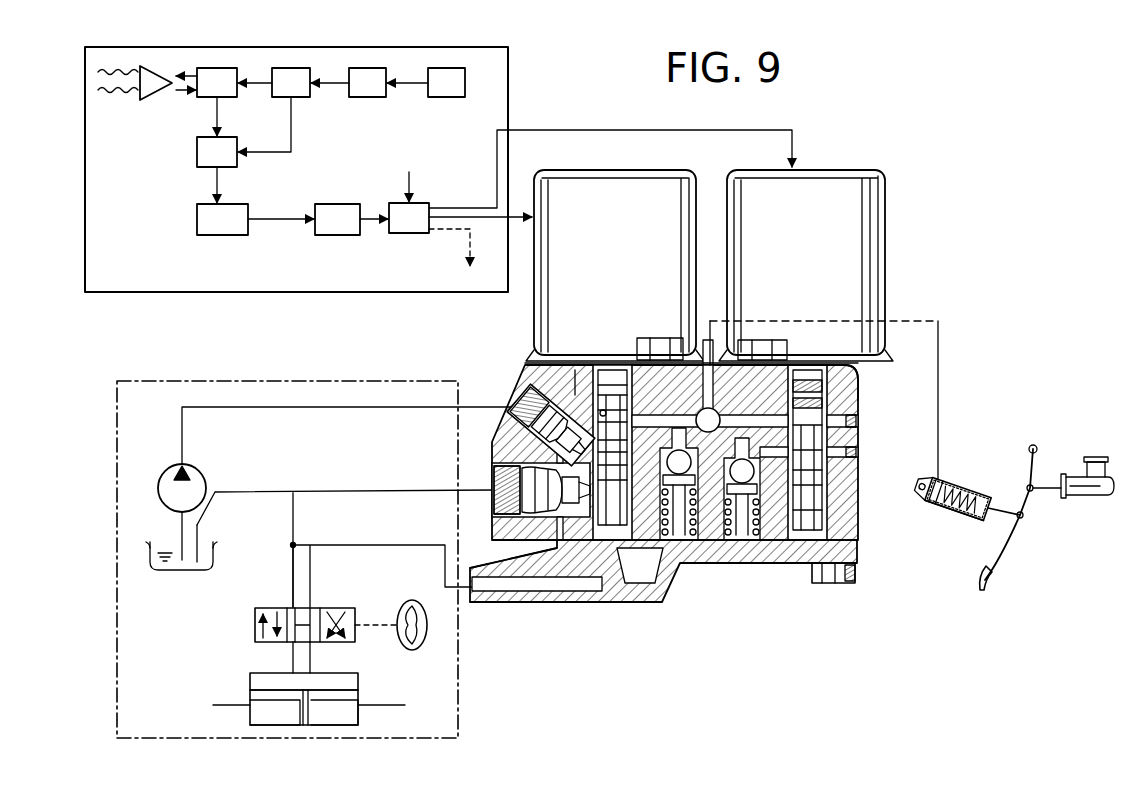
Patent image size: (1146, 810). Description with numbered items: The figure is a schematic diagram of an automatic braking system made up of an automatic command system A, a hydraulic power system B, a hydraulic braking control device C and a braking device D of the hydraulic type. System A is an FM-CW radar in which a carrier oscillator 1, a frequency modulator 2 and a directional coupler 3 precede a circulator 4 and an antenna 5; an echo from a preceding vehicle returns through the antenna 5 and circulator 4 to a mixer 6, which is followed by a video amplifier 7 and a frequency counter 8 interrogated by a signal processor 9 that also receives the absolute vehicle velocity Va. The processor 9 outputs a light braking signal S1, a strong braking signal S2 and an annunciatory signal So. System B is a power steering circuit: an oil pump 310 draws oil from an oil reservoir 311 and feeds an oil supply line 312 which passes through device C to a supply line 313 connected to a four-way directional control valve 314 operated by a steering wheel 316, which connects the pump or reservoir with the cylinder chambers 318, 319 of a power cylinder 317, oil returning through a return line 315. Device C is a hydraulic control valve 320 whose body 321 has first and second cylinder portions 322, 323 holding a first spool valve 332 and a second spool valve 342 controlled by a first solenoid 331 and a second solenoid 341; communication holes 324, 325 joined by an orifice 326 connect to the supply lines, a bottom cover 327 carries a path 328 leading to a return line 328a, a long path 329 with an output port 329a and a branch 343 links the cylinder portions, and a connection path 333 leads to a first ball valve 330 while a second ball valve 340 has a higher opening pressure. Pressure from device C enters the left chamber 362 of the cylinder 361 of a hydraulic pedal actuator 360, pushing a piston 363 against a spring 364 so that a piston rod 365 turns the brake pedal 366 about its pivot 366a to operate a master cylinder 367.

The carrier oscillator 1 is at (444, 97).
The frequency modulator 2 is at (364, 97).
The directional coupler 3 is at (300, 97).
The circulator 4 is at (205, 97).
The antenna 5 is at (142, 100).
The mixer 6 is at (196, 156).
The video amplifier 7 is at (211, 235).
The frequency counter 8 is at (327, 204).
The signal processor 9 is at (400, 233).
The automatic command system A is at (509, 78).
The hydraulic power system B is at (340, 381).
The hydraulic braking control device C is at (908, 213).
The braking device D is at (1072, 452).
The absolute velocity Va is at (410, 171).
The light braking signal S1 is at (483, 222).
The strong braking signal S2 is at (467, 204).
The annunciatory signal So is at (449, 247).
The oil pump 310 is at (198, 470).
The oil reservoir 311 is at (176, 570).
The oil supply line 312 is at (282, 407).
The supply line 313 is at (345, 492).
The directional control valve 314 is at (322, 600).
The return line 315 is at (293, 573).
The steering wheel 316 is at (403, 650).
The power cylinder 317 is at (246, 692).
The cylinder chamber 318 is at (250, 718).
The cylinder chamber 319 is at (340, 718).
The hydraulic control valve 320 is at (512, 358).
The body 321 is at (870, 386).
The first cylinder portion 322 is at (575, 378).
The second cylinder portion 323 is at (815, 465).
The communication hole 324 is at (527, 417).
The communication hole 325 is at (492, 503).
The orifice 326 is at (492, 450).
The bottom cover 327 is at (720, 565).
The path 328 is at (515, 588).
The return line 328a is at (330, 545).
The long path 329 is at (650, 415).
The output port 329a is at (716, 410).
The first ball valve 330 is at (770, 548).
The first solenoid 331 is at (632, 178).
The first spool valve 332 is at (613, 478).
The connection path 333 is at (805, 553).
The second ball valve 340 is at (705, 548).
The second solenoid 341 is at (844, 180).
The second spool valve 342 is at (810, 375).
The branch 343 is at (703, 347).
The hydraulic pedal actuator 360 is at (960, 420).
The cylinder 361 is at (964, 520).
The left chamber 362 is at (940, 343).
The piston 363 is at (942, 517).
The spring 364 is at (968, 488).
The piston rod 365 is at (1005, 518).
The brake pedal 366 is at (992, 580).
The pivot 366a is at (1036, 445).
The master cylinder 367 is at (1085, 494).